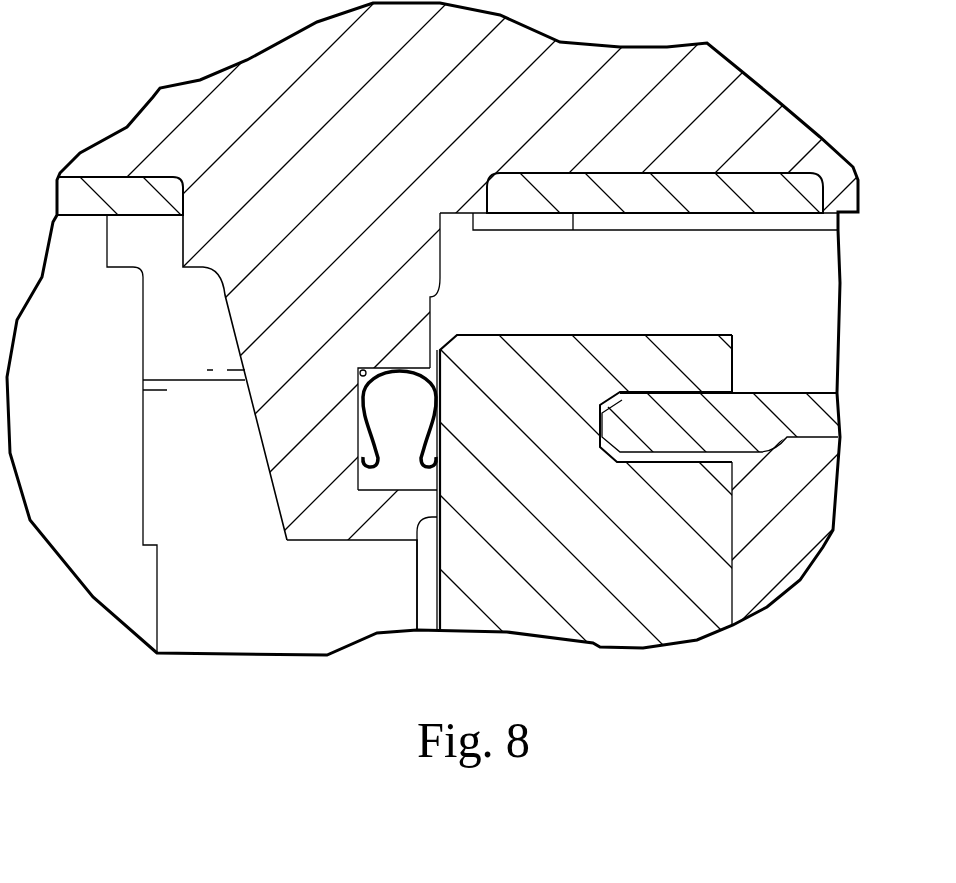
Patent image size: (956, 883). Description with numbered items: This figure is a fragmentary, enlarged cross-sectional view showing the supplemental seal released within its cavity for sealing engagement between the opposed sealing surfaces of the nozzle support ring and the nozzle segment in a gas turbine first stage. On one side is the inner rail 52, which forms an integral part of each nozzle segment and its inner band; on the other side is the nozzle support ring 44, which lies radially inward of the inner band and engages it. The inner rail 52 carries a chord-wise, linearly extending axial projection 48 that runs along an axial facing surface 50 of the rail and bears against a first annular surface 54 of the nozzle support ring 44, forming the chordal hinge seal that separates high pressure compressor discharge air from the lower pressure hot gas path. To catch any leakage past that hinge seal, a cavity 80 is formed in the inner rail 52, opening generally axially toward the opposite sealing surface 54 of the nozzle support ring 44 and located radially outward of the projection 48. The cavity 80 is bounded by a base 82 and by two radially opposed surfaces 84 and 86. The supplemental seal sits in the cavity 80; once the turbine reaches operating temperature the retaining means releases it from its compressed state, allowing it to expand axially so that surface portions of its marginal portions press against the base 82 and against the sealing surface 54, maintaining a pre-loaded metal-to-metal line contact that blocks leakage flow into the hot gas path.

The nozzle support ring 44 is at (643, 600).
The axial projection 48 is at (413, 510).
The axial facing surface 50 is at (432, 340).
The inner rail 52 is at (322, 327).
The first annular surface 54 is at (437, 617).
The cavity 80 is at (393, 440).
The base 82 is at (358, 452).
The radially opposed surface 84 is at (364, 370).
The radially opposed surface 86 is at (413, 486).